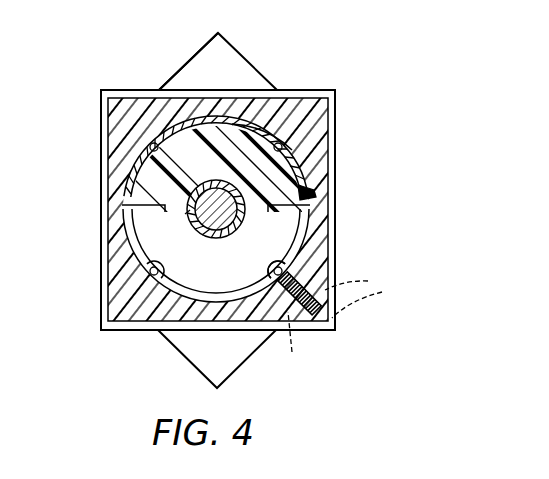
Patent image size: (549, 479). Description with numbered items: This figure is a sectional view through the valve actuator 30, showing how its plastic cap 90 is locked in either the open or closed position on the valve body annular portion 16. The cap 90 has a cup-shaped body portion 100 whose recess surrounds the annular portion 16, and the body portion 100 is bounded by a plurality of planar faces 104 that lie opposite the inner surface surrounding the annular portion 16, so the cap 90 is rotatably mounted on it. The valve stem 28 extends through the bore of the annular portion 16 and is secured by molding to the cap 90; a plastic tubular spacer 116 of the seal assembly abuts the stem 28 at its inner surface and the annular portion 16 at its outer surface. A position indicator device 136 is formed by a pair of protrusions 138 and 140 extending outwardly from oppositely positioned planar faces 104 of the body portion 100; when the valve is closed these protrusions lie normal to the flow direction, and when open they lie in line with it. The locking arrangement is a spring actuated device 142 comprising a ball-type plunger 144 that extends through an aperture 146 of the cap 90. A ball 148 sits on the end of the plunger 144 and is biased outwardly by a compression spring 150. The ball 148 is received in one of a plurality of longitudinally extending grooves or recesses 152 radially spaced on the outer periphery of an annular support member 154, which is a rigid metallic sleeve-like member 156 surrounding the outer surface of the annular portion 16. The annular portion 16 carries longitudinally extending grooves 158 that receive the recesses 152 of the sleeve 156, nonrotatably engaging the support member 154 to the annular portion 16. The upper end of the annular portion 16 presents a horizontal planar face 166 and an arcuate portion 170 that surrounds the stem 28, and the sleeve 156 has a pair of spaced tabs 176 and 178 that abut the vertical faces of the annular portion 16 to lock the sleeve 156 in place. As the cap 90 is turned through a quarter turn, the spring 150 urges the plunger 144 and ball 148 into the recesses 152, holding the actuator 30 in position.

The valve body annular portion 16 is at (150, 174).
The valve stem 28 is at (244, 213).
The valve actuator 30 is at (95, 116).
The cap 90 is at (101, 117).
The cup-shaped body portion 100 is at (318, 125).
The planar faces 104 is at (150, 89).
The tubular spacer 116 is at (188, 213).
The position indicator device 136 is at (248, 40).
The protrusion 138 is at (212, 36).
The protrusion 140 is at (188, 349).
The spring actuated device 142 is at (310, 274).
The ball-type plunger 144 is at (373, 301).
The aperture 146 is at (307, 340).
The ball 148 is at (275, 272).
The compression spring 150 is at (382, 279).
The grooves or recesses 152 is at (153, 145).
The annular support member 154 is at (318, 192).
The metallic sleeve-like member 156 is at (258, 120).
The longitudinally extending grooves 158 is at (216, 116).
The horizontal planar face 166 is at (198, 283).
The arcuate portion 170 is at (245, 242).
The tab 176 is at (305, 232).
The tab 178 is at (146, 221).